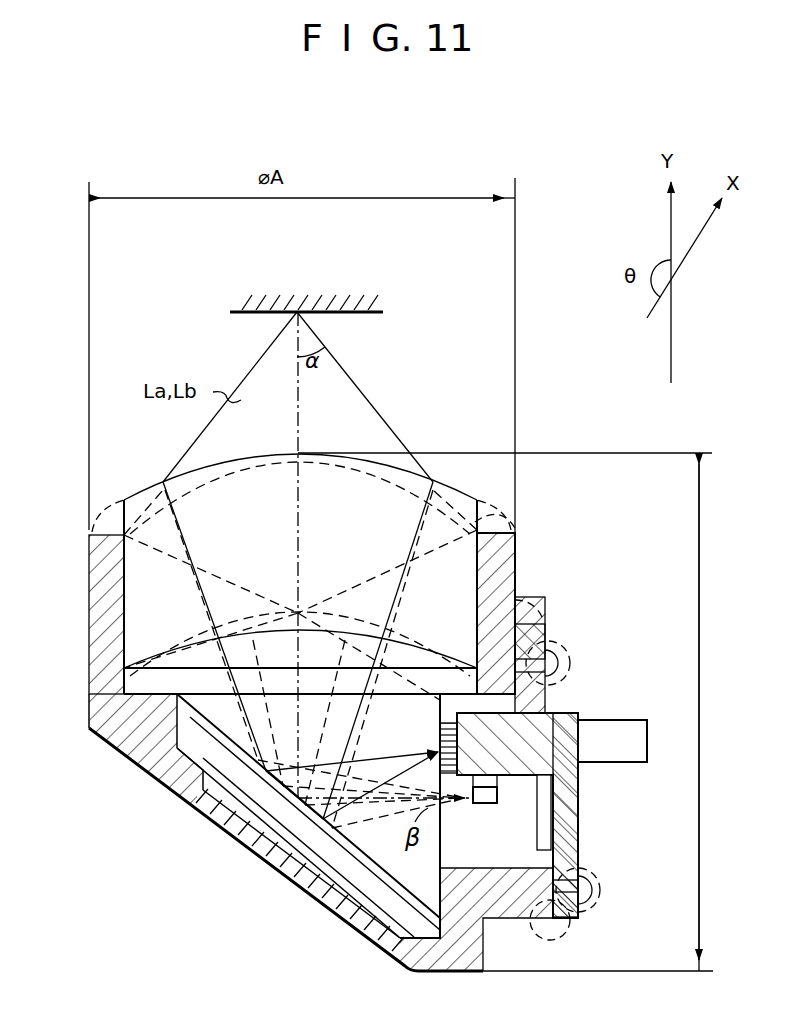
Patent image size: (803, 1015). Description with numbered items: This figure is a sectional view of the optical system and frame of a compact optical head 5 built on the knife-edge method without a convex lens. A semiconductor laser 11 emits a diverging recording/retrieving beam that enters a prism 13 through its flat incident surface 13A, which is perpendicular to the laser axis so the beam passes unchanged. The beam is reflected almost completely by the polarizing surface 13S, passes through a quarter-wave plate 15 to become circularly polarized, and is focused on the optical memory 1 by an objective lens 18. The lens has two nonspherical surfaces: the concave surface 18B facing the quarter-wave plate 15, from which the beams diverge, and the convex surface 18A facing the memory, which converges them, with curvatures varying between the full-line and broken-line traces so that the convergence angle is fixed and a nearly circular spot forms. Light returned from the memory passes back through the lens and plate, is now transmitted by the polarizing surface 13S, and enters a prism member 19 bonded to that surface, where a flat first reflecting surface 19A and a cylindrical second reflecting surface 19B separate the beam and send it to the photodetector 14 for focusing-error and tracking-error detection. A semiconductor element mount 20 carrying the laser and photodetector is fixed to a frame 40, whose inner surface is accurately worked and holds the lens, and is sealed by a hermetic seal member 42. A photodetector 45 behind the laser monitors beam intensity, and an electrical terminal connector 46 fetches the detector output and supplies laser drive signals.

The optical memory 1 is at (365, 312).
The optical head 5 is at (80, 642).
The semiconductor laser 11 is at (489, 805).
The prism 13 is at (299, 756).
The incident surface 13A is at (447, 880).
The polarizing surface 13S is at (210, 666).
The photodetector 14 is at (440, 735).
The quarter-wave plate 15 is at (132, 682).
The objective lens 18 is at (300, 467).
The nonspherical surface 18A is at (298, 455).
The nonspherical surface 18B is at (320, 631).
The prism member 19 is at (254, 790).
The first reflecting surface 19A is at (221, 756).
The second reflecting surface 19B is at (375, 882).
The semiconductor element mount 20 is at (578, 798).
The frame 40 is at (513, 550).
The hermetic seal member 42 is at (487, 520).
The photodetector 45 is at (547, 837).
The electrical terminal connector 46 is at (614, 722).